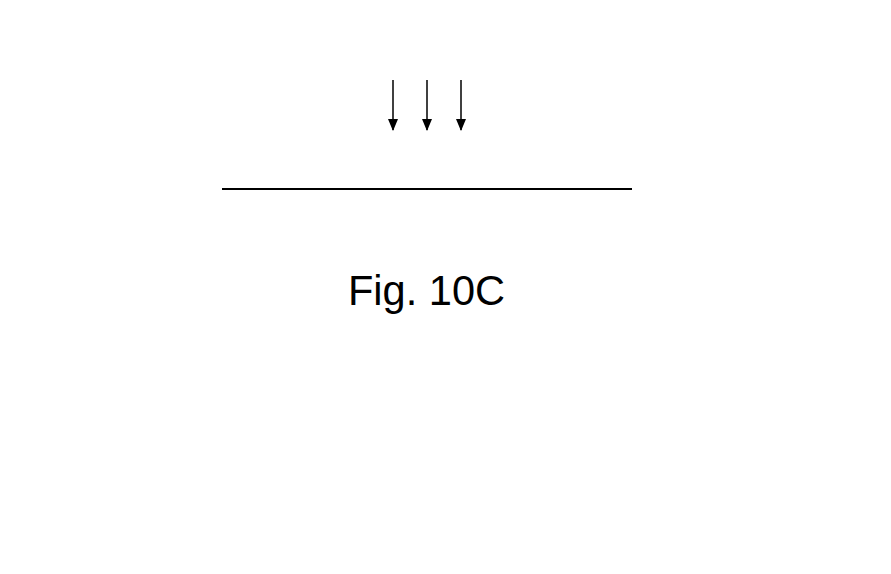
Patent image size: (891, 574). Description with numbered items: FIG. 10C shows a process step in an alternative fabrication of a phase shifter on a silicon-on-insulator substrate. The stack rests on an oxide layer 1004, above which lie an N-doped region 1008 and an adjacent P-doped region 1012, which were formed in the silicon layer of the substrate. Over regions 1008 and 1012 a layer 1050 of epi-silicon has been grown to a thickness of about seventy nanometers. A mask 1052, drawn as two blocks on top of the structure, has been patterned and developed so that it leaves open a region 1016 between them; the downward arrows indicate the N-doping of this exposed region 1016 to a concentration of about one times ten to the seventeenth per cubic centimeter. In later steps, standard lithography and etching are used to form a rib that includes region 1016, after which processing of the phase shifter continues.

The oxide layer 1004 is at (615, 231).
The N-doped region 1008 is at (228, 182).
The P-doped region 1012 is at (605, 173).
The region 1016 is at (403, 157).
The layer of epi-silicon 1050 is at (610, 150).
The mask 1052 is at (299, 113).